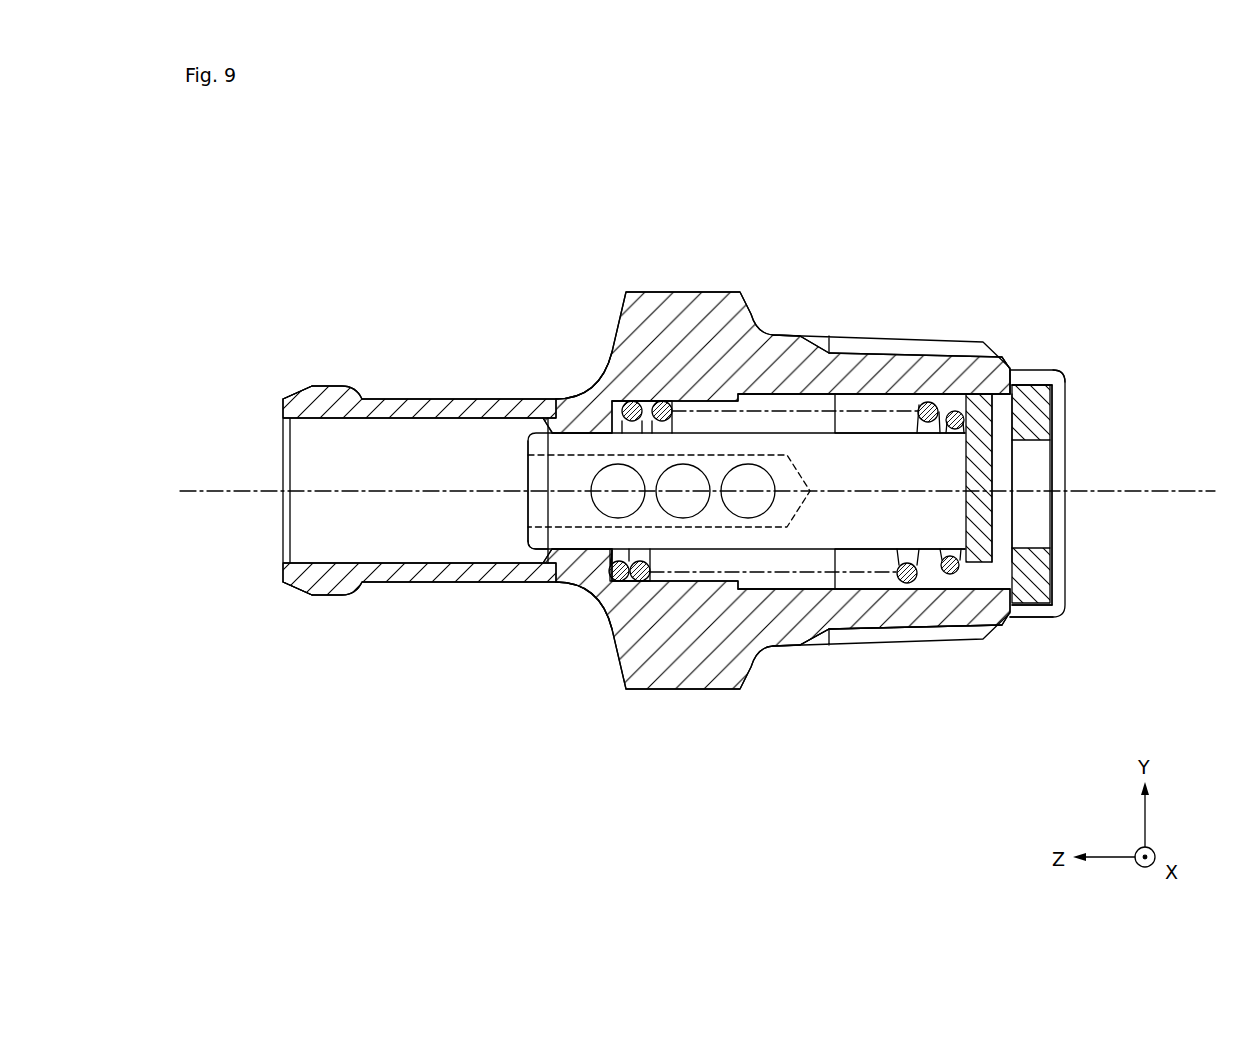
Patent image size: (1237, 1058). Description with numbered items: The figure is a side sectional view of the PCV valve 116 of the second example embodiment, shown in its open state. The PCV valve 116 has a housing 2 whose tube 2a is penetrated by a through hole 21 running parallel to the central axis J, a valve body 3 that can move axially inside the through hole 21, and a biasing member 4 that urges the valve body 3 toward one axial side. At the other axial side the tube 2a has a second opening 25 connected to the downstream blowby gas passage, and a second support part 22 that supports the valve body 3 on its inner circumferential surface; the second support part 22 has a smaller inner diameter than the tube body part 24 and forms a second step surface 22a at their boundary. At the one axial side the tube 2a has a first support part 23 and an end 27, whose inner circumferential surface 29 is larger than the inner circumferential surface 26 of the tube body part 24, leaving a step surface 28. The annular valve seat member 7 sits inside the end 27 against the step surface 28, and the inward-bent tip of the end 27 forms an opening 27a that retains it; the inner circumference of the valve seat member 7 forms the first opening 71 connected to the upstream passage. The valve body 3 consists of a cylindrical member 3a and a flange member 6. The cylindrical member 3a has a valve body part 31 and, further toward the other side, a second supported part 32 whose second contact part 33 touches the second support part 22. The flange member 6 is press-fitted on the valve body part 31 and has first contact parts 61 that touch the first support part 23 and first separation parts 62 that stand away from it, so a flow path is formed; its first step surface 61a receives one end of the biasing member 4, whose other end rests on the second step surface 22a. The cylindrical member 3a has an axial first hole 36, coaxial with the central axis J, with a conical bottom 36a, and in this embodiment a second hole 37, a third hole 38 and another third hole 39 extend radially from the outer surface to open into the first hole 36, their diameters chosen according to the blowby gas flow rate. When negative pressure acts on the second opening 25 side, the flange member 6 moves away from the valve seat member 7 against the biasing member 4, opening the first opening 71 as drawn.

The PCV valve 116 is at (1043, 182).
The housing 2 is at (690, 312).
The tube 2a is at (771, 338).
The through hole 21 is at (440, 432).
The second support part 22 is at (573, 412).
The second step surface 22a is at (628, 404).
The first support part 23 is at (977, 380).
The tube body part 24 is at (798, 378).
The second opening 25 is at (300, 562).
The inner circumferential surface 26 is at (1022, 575).
The end 27 is at (1058, 392).
The opening 27a is at (1060, 406).
The step surface 28 is at (1032, 613).
The inner circumferential surface 29 is at (1032, 390).
The valve body 3 is at (805, 540).
The cylindrical member 3a is at (823, 540).
The valve body part 31 is at (790, 540).
The second supported part 32 is at (593, 535).
The second contact part 33 is at (528, 540).
The first hole 36 is at (540, 464).
The bottom 36a is at (805, 470).
The second hole 37 is at (608, 482).
The third hole 38 is at (692, 515).
The third hole 39 is at (750, 515).
The biasing member 4 is at (924, 402).
The flange member 6 is at (985, 532).
The first contact part 61 is at (981, 410).
The first step surface 61a is at (953, 393).
The first separation part 62 is at (979, 563).
The valve seat member 7 is at (1062, 380).
The first opening 71 is at (1035, 440).
The central axis J is at (213, 490).